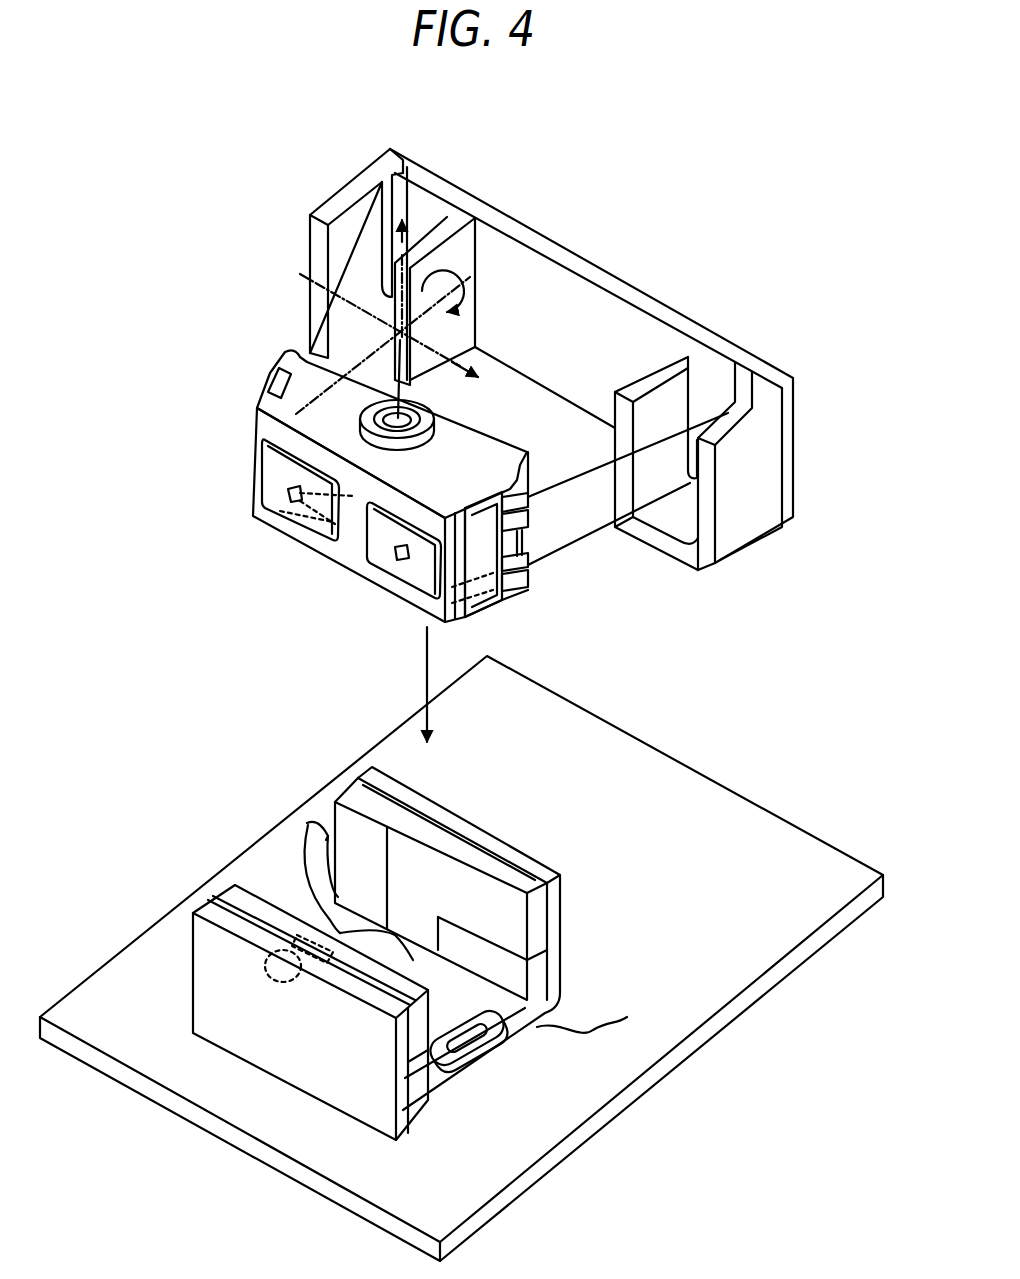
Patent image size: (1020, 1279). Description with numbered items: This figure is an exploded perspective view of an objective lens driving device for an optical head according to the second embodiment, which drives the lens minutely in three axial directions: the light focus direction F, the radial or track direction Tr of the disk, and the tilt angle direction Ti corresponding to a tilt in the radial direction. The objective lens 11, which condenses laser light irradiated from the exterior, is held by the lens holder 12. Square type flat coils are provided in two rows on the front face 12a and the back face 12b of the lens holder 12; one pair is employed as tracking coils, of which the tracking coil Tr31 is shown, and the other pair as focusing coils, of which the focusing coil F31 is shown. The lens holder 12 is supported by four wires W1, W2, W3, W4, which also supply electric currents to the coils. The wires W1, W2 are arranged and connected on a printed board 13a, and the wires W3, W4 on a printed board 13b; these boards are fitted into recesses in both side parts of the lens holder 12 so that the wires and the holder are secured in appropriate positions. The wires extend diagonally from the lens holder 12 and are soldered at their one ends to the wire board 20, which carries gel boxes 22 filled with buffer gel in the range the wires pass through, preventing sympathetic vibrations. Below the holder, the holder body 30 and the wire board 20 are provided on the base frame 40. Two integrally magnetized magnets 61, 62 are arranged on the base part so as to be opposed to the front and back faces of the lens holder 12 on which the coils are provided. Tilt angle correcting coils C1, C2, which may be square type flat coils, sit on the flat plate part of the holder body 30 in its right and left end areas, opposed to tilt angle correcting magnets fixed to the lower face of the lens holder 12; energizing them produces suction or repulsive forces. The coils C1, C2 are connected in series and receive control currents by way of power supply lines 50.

The objective lens 11 is at (412, 430).
The lens holder 12 is at (258, 404).
The front face 12a is at (253, 431).
The back face 12b is at (529, 446).
The printed board 13a is at (467, 508).
The printed board 13b is at (278, 376).
The wire board 20 is at (508, 222).
The gel boxes 22 is at (322, 208).
The holder body 30 is at (562, 904).
The base frame 40 is at (796, 832).
The power supply lines 50 is at (280, 835).
The magnet 61 is at (492, 858).
The magnet 62 is at (340, 970).
The tilt angle correcting coil C1 is at (480, 1058).
The tilt angle correcting coil C2 is at (327, 917).
The tracking coil Tr31 is at (277, 508).
The focusing coil F31 is at (403, 580).
The wire W1 is at (560, 485).
The wire W2 is at (560, 556).
The wire W3 is at (356, 282).
The wire W4 is at (388, 352).
The focus direction F is at (410, 311).
The tilt angle direction Ti is at (383, 327).
The radial direction Tr is at (405, 335).